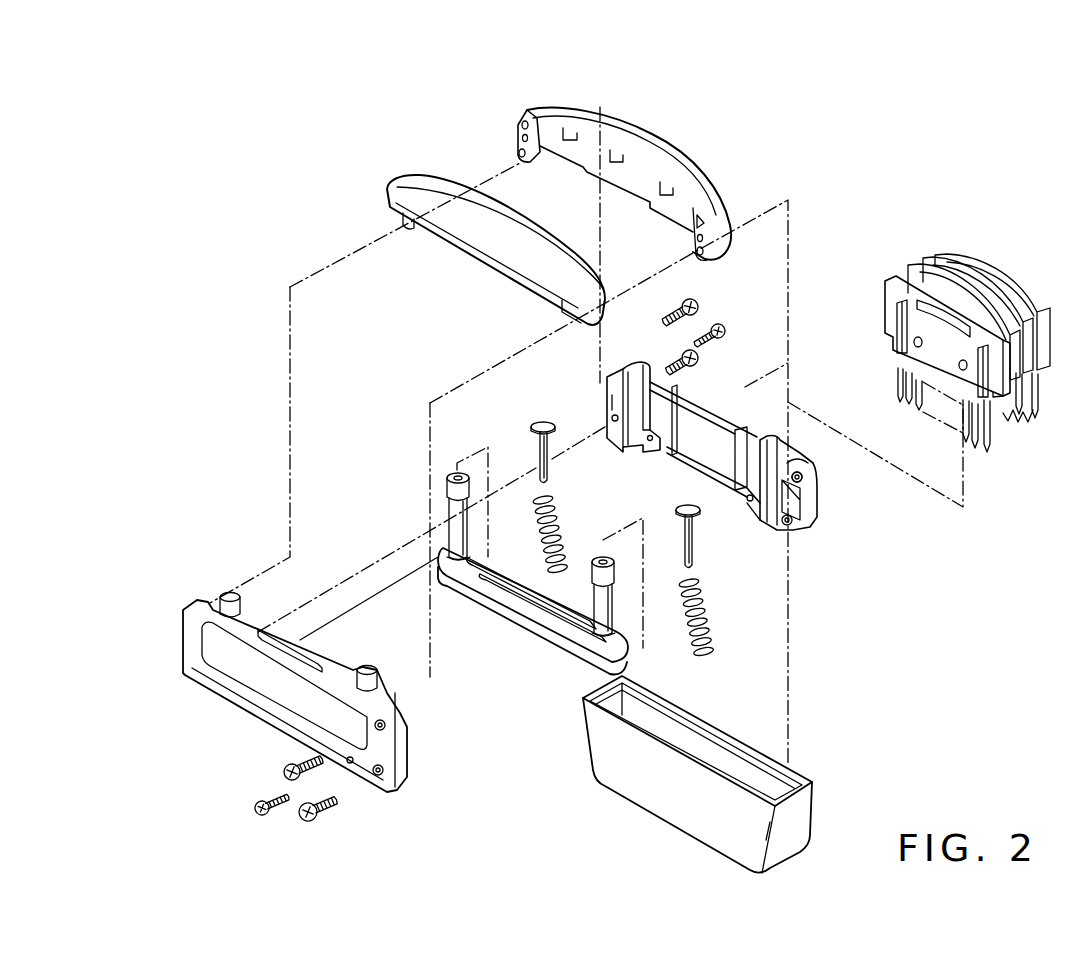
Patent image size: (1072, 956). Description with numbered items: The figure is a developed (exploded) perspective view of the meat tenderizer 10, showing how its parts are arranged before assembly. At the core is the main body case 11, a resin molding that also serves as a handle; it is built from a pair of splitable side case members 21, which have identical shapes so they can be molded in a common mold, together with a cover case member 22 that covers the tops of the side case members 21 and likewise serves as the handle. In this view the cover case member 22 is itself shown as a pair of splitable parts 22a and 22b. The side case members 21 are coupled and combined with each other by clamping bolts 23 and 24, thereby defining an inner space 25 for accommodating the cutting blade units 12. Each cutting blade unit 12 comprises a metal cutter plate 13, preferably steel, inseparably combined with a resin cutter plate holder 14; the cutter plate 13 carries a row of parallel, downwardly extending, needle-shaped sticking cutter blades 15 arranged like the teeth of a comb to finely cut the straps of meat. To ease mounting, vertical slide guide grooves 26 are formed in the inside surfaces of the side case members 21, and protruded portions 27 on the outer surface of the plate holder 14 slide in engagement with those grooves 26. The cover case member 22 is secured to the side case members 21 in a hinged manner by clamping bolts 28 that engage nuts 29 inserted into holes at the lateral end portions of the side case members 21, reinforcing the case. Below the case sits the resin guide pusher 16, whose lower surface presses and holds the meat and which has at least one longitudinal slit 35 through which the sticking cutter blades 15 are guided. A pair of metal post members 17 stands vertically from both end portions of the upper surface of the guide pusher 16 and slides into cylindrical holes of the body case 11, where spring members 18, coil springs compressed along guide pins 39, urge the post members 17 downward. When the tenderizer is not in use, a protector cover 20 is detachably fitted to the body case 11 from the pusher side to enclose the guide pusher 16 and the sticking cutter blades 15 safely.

The meat tenderizer 10 is at (585, 486).
The main body case 11 is at (576, 212).
The cutting blade unit 12 is at (935, 327).
The cutter plate 13 is at (903, 360).
The cutter plate holder 14 is at (887, 308).
The sticking cutter blades 15 is at (910, 408).
The guide pusher 16 is at (531, 613).
The post members 17 is at (454, 508).
The spring members 18 is at (553, 525).
The protector cover 20 is at (815, 785).
The side case members 21 is at (183, 640).
The cover case member 22 is at (545, 212).
The splitable half 22a is at (522, 117).
The splitable half 22b is at (496, 228).
The clamping bolt 23 is at (700, 368).
The clamping bolt 24 is at (727, 331).
The inner space 25 is at (683, 432).
The slide guide grooves 26 is at (742, 460).
The protruded portions 27 is at (978, 388).
The clamping bolts 28 is at (700, 300).
The nuts 29 is at (798, 478).
The slit 35 is at (512, 582).
The guide pins 39 is at (540, 453).